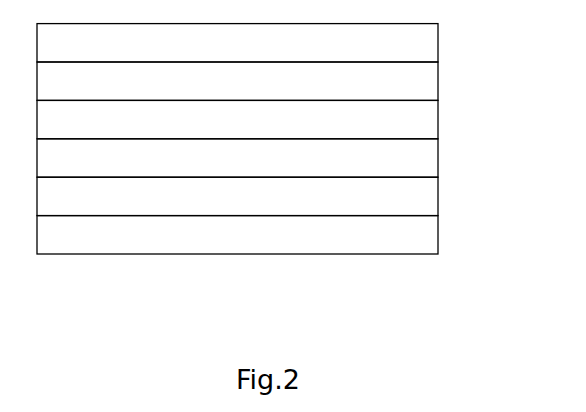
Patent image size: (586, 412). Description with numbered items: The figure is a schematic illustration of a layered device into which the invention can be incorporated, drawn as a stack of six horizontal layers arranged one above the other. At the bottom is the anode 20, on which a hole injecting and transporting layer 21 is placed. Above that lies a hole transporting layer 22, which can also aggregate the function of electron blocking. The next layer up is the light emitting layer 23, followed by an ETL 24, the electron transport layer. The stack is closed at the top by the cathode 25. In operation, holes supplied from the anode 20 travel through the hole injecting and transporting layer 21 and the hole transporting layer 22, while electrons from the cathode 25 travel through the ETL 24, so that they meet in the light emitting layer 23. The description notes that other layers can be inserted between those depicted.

The anode 20 is at (438, 238).
The hole injecting and transporting layer 21 is at (438, 200).
The hole transporting layer 22 is at (438, 162).
The light emitting layer 23 is at (438, 125).
The ETL 24 is at (438, 87).
The cathode 25 is at (438, 49).